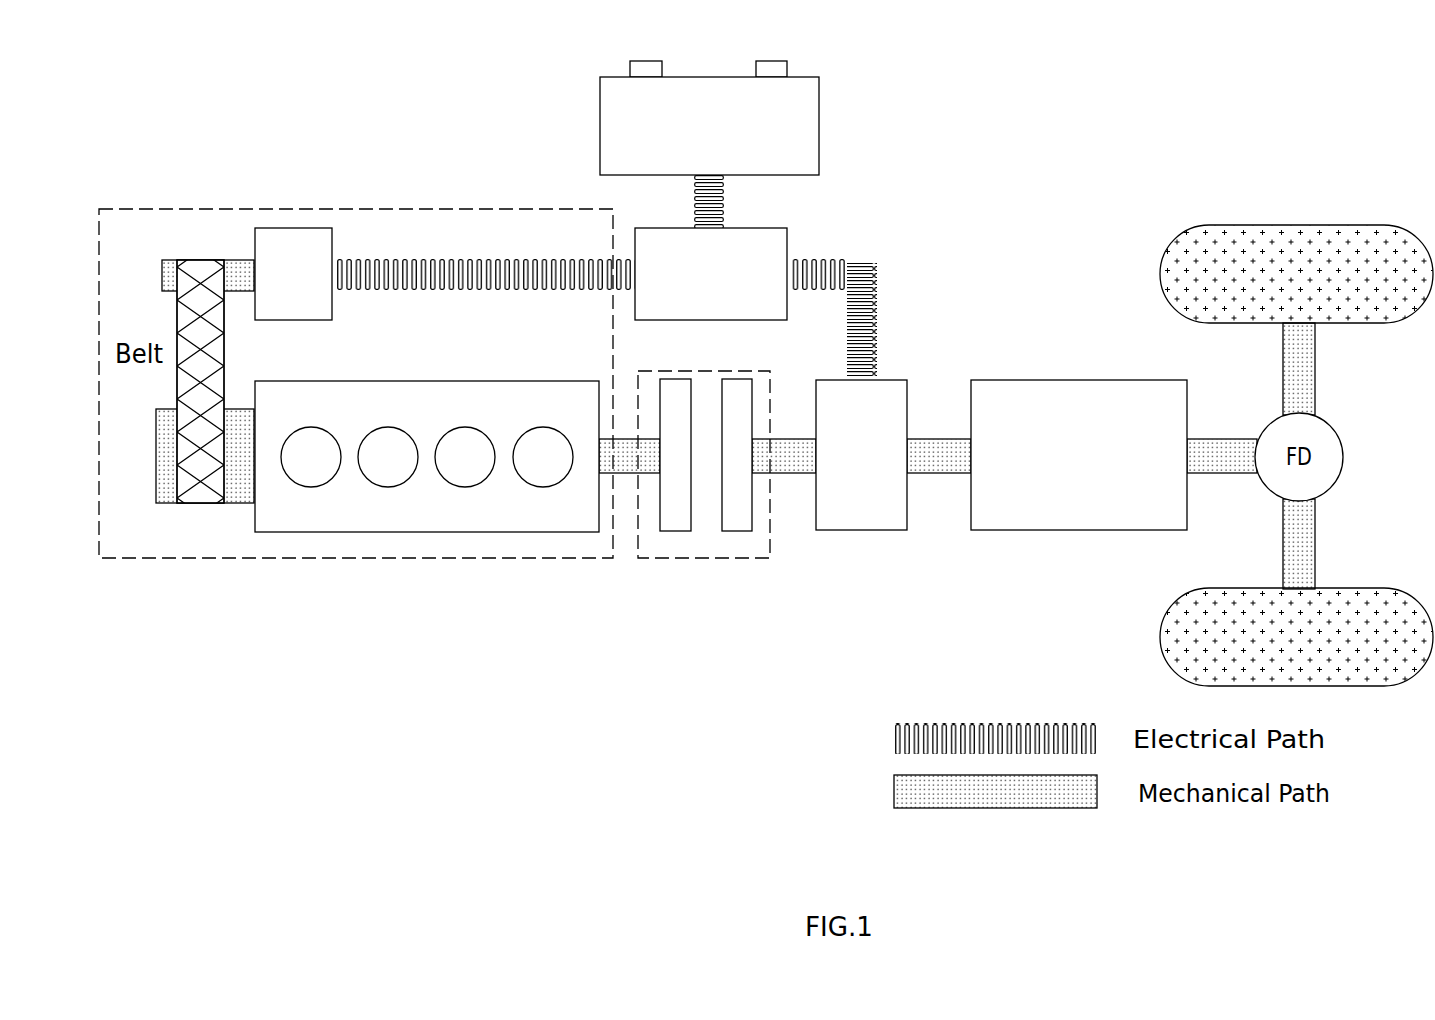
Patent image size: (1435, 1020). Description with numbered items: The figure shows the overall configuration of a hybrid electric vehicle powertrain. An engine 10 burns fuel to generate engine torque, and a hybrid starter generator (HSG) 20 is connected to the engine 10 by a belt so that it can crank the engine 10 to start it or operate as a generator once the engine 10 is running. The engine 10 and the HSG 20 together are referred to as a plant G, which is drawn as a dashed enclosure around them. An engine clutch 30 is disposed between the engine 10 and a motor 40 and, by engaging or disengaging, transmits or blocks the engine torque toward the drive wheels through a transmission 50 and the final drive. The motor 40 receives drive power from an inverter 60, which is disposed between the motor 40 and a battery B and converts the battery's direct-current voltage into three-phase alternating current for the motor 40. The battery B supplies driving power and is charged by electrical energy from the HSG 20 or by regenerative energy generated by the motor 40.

The engine 10 is at (427, 532).
The hybrid starter generator (HSG) 20 is at (295, 228).
The engine clutch 30 is at (703, 558).
The motor 40 is at (863, 530).
The transmission 50 is at (1082, 530).
The inverter 60 is at (787, 240).
The battery B is at (708, 77).
The plant G is at (349, 209).